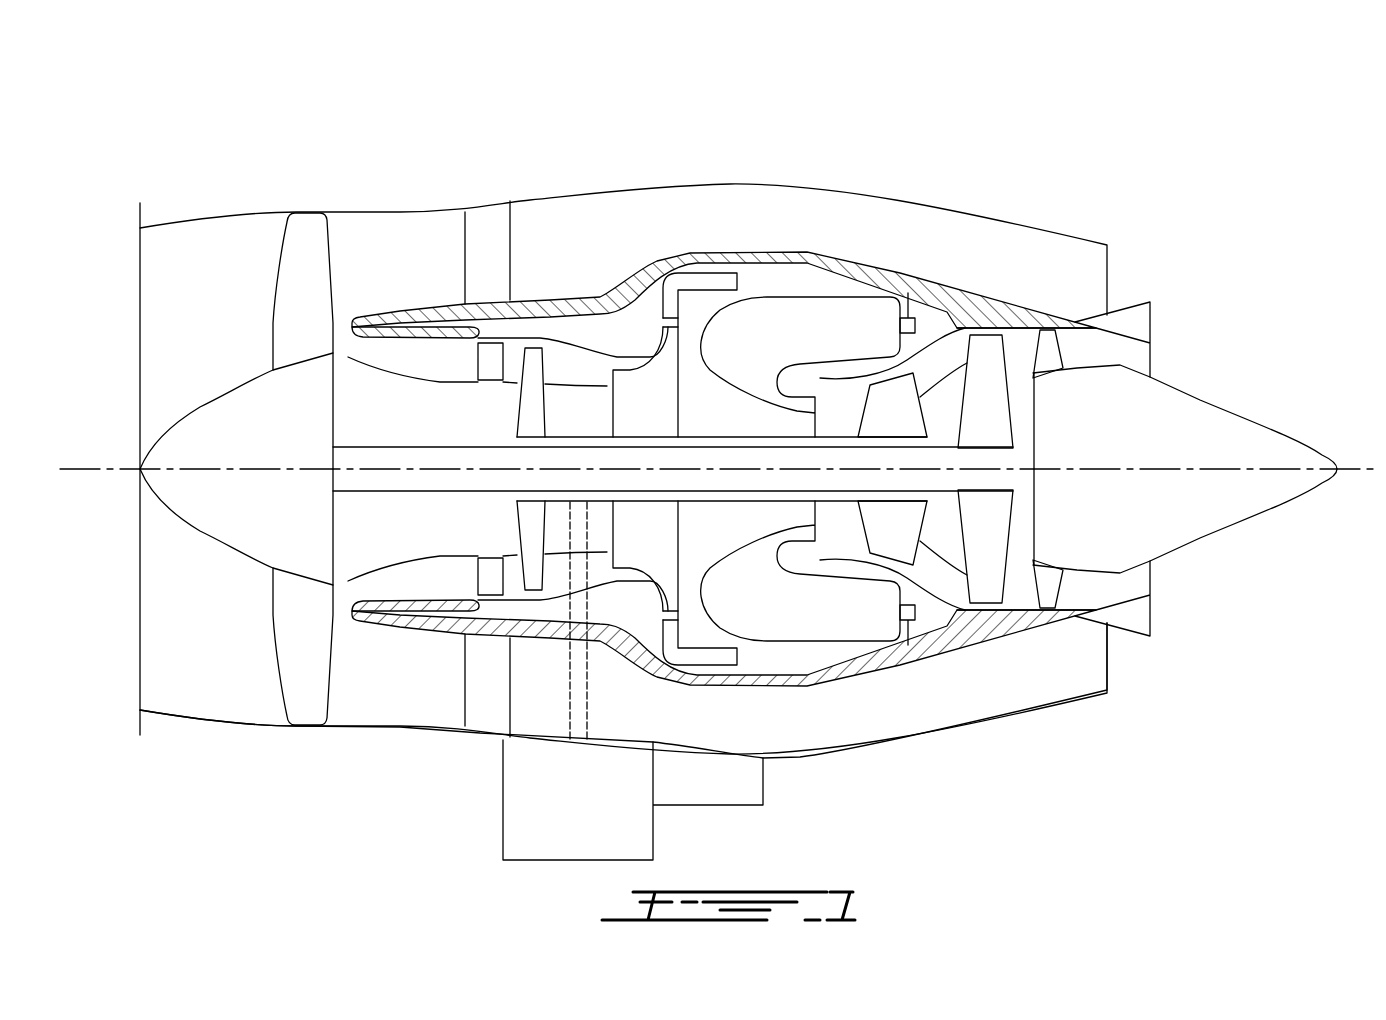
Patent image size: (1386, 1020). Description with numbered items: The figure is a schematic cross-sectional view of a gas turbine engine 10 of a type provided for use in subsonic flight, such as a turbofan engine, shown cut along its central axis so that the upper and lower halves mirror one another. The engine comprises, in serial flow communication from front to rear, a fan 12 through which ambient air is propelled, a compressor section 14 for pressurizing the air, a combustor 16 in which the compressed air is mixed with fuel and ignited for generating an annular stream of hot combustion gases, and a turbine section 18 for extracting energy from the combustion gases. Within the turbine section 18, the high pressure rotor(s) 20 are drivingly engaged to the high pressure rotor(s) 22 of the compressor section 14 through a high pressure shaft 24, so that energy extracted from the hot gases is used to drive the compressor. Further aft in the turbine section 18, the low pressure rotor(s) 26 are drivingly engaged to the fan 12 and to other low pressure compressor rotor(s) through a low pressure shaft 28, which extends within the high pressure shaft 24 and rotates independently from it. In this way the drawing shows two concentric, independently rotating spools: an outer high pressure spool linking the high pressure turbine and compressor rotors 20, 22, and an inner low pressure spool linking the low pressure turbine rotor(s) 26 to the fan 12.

The gas turbine engine 10 is at (933, 135).
The fan 12 is at (298, 633).
The compressor section 14 is at (567, 363).
The combustor 16 is at (800, 318).
The turbine section 18 is at (940, 540).
The high pressure rotor(s) of the turbine section 20 is at (893, 402).
The high pressure rotor(s) of the compressor section 22 is at (647, 393).
The high pressure shaft 24 is at (807, 425).
The low pressure rotor(s) of the turbine section 26 is at (992, 363).
The low pressure shaft 28 is at (383, 492).